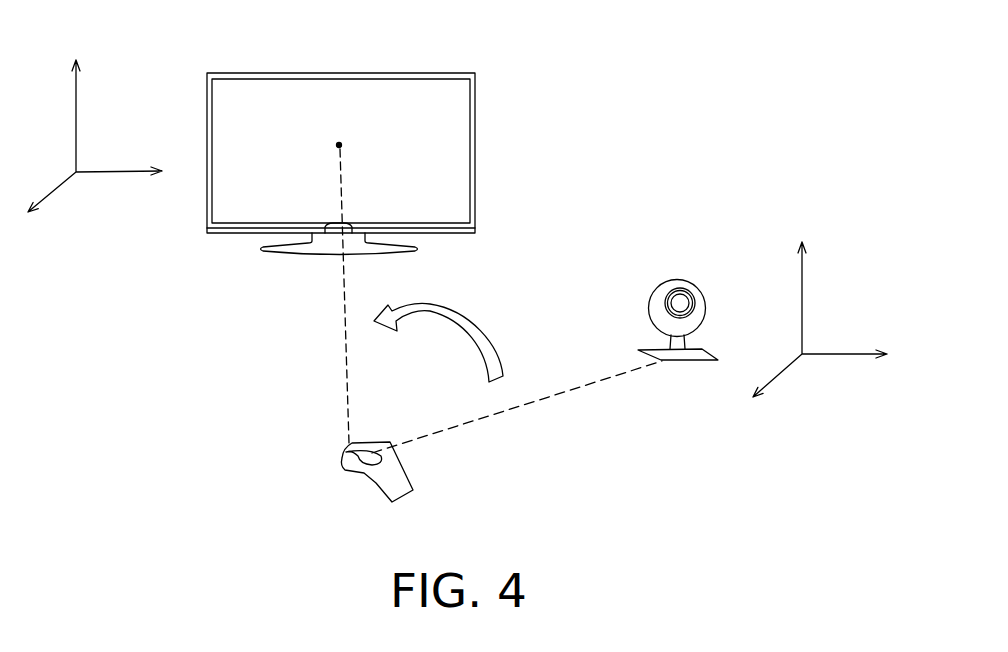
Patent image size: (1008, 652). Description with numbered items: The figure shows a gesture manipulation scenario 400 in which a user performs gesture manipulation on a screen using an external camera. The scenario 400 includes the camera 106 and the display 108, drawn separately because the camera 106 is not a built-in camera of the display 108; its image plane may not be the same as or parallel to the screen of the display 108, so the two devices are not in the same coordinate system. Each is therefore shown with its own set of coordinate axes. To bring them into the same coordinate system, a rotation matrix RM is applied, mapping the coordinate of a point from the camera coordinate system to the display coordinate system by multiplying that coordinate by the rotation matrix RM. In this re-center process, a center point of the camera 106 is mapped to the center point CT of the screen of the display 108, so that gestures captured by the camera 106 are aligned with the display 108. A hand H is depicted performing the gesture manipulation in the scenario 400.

The display 108 is at (397, 73).
The camera 106 is at (677, 279).
The gesture manipulation scenario 400 is at (725, 539).
The center point CT is at (338, 128).
The rotation matrix RM is at (438, 336).
The hand of user H is at (398, 472).